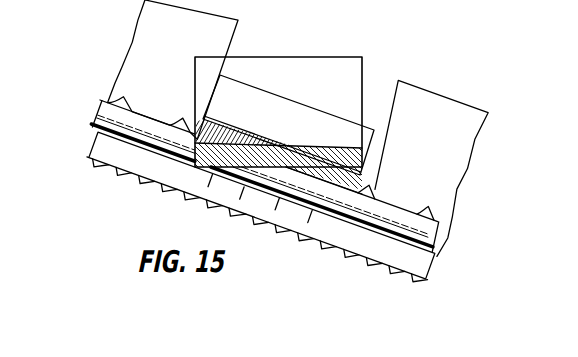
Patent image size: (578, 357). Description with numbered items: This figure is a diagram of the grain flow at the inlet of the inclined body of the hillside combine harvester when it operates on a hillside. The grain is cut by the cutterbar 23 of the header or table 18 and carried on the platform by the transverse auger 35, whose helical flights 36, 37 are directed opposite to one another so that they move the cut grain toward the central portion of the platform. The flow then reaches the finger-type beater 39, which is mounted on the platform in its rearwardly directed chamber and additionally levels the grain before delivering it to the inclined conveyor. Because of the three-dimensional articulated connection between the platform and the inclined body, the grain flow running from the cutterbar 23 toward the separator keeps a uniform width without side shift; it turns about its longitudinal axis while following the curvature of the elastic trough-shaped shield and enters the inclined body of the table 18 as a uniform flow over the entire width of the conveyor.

The header or table 18 is at (470, 194).
The cutterbar 23 is at (321, 251).
The transverse auger 35 is at (435, 262).
The helical flight 36 is at (117, 84).
The helical flight 37 is at (438, 217).
The finger-type beater on feed means 39 is at (330, 131).